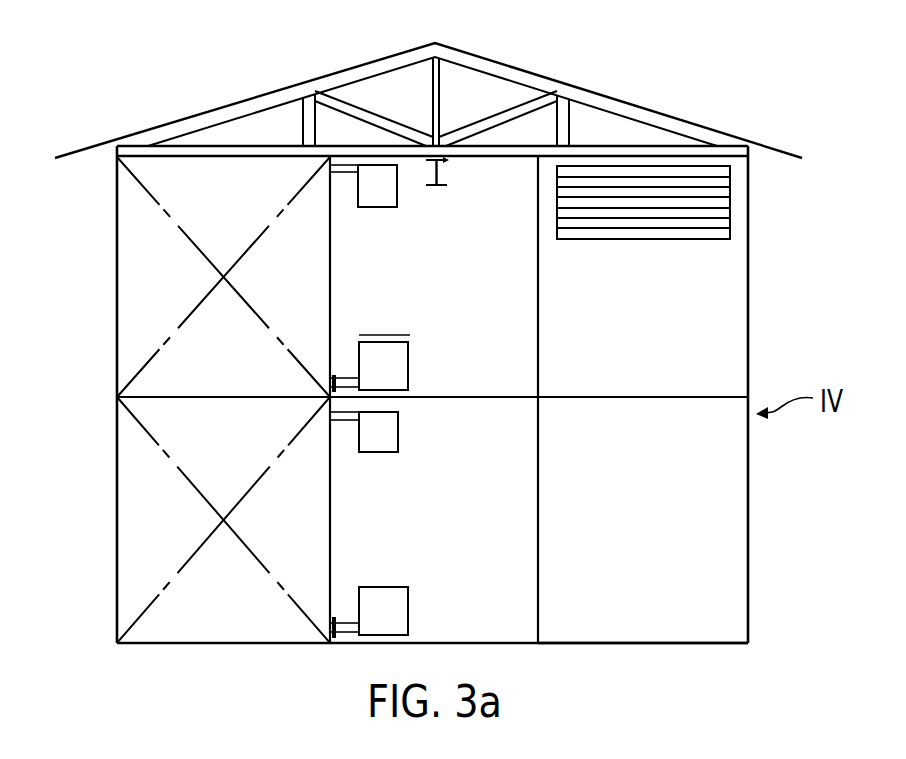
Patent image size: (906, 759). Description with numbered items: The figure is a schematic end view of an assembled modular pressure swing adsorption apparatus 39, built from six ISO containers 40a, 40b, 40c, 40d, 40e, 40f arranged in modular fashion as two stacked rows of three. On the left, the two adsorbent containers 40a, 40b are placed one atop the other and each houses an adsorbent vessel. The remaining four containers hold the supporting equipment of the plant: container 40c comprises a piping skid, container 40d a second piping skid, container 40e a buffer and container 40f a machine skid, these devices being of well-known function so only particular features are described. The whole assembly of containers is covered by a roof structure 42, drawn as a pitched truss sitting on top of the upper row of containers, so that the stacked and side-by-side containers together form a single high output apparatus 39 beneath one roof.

The modular PSA apparatus 39 is at (109, 332).
The roof structure 42 is at (643, 100).
The adsorbent container 40a is at (305, 299).
The adsorbent container 40b is at (310, 529).
The piping skid container 40c is at (458, 298).
The second piping skid container 40d is at (460, 529).
The buffer container 40e is at (665, 298).
The machine skid container 40f is at (668, 529).